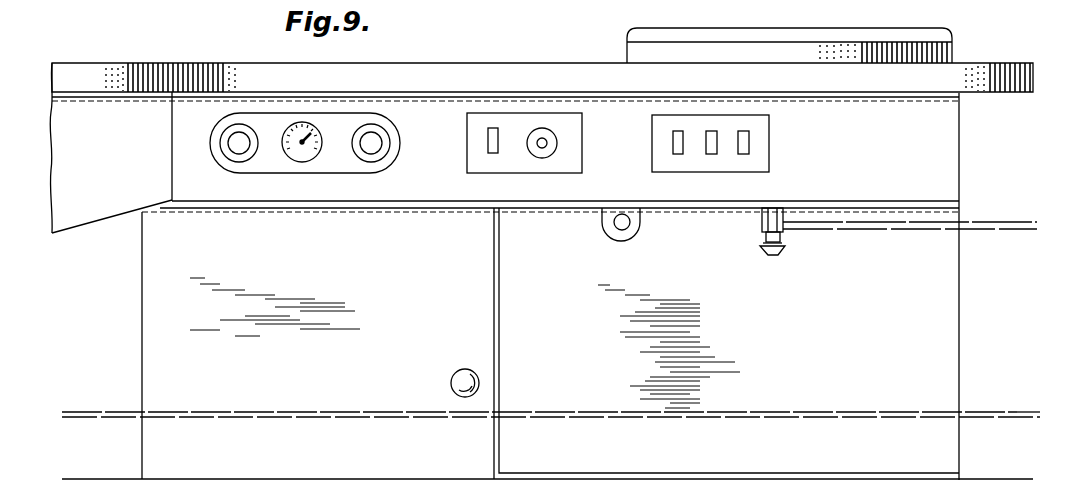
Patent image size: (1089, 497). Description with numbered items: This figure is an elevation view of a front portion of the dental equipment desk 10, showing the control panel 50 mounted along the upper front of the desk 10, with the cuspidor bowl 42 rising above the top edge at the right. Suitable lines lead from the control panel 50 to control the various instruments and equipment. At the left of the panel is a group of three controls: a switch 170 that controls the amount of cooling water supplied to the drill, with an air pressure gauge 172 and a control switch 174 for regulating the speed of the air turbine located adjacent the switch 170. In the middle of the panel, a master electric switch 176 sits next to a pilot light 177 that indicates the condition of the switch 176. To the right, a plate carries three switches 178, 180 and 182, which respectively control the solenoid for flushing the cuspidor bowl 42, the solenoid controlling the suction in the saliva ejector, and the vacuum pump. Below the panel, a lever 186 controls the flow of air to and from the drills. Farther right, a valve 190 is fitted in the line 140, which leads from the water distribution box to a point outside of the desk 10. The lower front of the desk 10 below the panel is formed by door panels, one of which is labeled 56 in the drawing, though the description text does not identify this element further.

The desk 10 is at (522, 63).
The cuspidor bowl 42 is at (953, 48).
The control panel 50 is at (193, 181).
The door 56 is at (158, 352).
The line 140 is at (913, 227).
The switch 170 is at (238, 152).
The air pressure gauge 172 is at (304, 163).
The control switch 174 is at (370, 152).
The master electric switch 176 is at (490, 153).
The pilot light 177 is at (543, 150).
The switch 178 is at (678, 148).
The switch 180 is at (712, 148).
The switch 182 is at (745, 146).
The lever 186 is at (618, 237).
The valve 190 is at (775, 255).